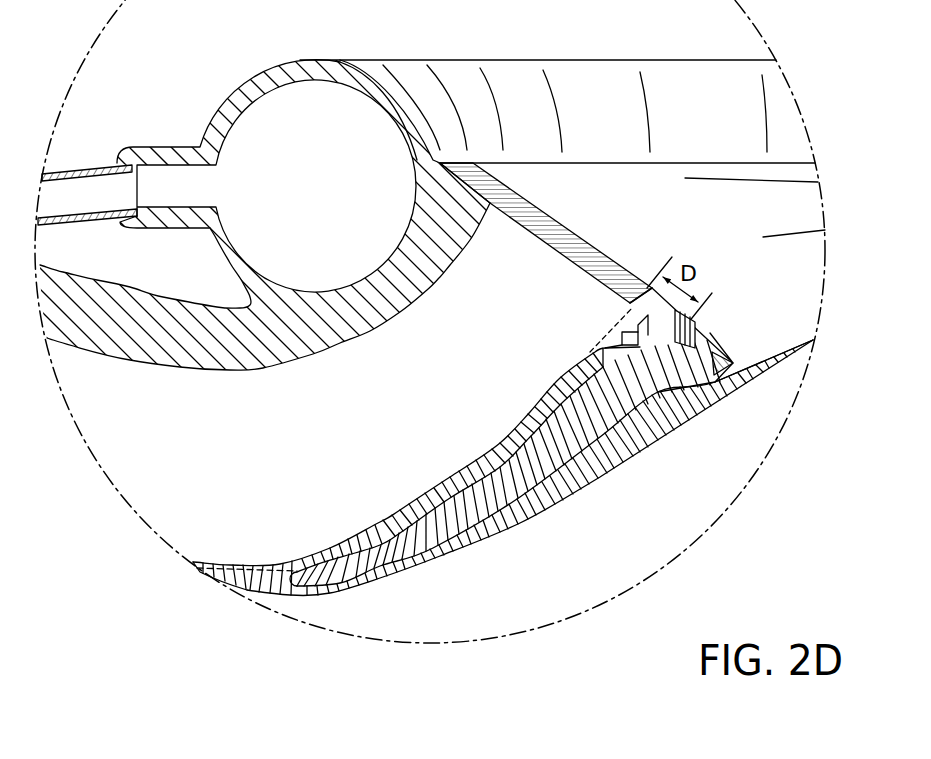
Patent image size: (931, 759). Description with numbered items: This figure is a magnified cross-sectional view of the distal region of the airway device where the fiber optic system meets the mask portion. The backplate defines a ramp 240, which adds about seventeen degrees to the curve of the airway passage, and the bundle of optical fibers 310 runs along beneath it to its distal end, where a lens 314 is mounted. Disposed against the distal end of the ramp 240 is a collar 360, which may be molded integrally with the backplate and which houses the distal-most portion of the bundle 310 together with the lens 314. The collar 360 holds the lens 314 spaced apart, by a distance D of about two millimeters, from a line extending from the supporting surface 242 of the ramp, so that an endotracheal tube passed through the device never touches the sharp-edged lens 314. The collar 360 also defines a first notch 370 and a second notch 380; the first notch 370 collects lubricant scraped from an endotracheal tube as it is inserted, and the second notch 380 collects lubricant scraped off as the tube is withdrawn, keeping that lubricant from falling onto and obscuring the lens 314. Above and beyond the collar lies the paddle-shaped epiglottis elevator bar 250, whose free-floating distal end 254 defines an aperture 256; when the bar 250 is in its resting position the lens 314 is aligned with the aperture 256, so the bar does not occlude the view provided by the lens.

The ramp 240 is at (513, 417).
The supporting surface 242 is at (457, 472).
The epiglottis elevator bar 250 is at (549, 216).
The distal end of the bar 254 is at (742, 360).
The aperture 256 is at (713, 245).
The bundle of optical fibers 310 is at (588, 471).
The lens 314 is at (808, 292).
The collar 360 is at (820, 325).
The first notch 370 is at (613, 330).
The second notch 380 is at (645, 287).